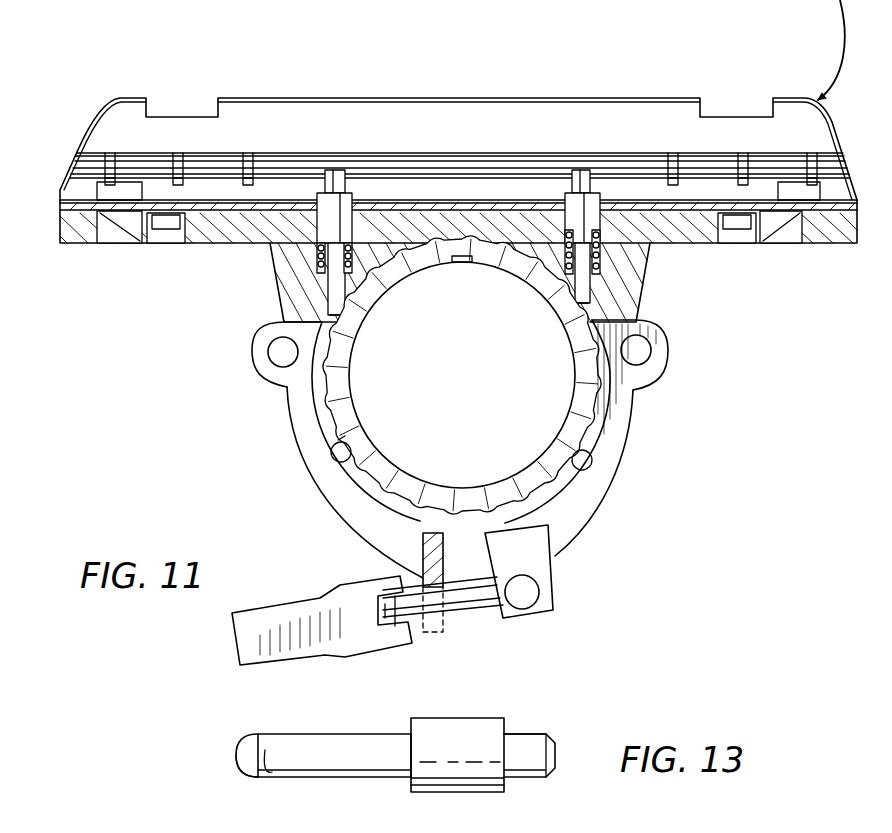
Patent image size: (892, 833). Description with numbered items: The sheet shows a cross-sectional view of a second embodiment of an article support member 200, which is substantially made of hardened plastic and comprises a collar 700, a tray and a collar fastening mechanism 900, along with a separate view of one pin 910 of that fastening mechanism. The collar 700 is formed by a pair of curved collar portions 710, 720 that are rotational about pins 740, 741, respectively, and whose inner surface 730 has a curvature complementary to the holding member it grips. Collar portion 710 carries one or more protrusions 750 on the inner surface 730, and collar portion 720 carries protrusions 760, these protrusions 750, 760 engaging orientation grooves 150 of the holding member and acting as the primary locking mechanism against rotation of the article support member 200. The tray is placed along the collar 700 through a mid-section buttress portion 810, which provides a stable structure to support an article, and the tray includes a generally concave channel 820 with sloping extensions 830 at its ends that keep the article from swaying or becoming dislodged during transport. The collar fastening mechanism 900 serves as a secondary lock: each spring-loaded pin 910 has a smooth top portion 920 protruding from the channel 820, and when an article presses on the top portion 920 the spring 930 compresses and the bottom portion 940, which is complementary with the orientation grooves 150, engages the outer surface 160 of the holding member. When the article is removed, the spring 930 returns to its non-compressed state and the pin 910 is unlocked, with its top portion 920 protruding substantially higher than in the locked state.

In FIG. 11, the orientation grooves 150 is at (353, 329).
In FIG. 11, the outer surface 160 is at (340, 442).
In FIG. 11, the article support member 200 is at (126, 355).
In FIG. 11, the collar 700 is at (485, 492).
In FIG. 11, the collar portion 710 is at (606, 496).
In FIG. 11, the collar portion 720 is at (368, 548).
In FIG. 11, the inner surface 730 is at (470, 482).
In FIG. 11, the pin 740 is at (632, 354).
In FIG. 11, the pin 741 is at (285, 368).
In FIG. 11, the protrusions 750 is at (592, 466).
In FIG. 11, the protrusions 760 is at (343, 462).
In FIG. 11, the mid-section buttress portion 810 is at (245, 230).
In FIG. 11, the concave channel 820 is at (535, 112).
In FIG. 11, the sloping extensions 830 is at (127, 132).
In FIG. 11, the collar fastening mechanism 900 is at (422, 135).
In FIG. 11, the pin 910 is at (333, 183).
In FIG. 13, the pin 910 is at (562, 694).
In FIG. 13, the top portion 920 is at (527, 738).
In FIG. 11, the spring 930 is at (318, 255).
In FIG. 11, the bottom portion 940 is at (330, 286).
In FIG. 13, the bottom portion 940 is at (246, 750).